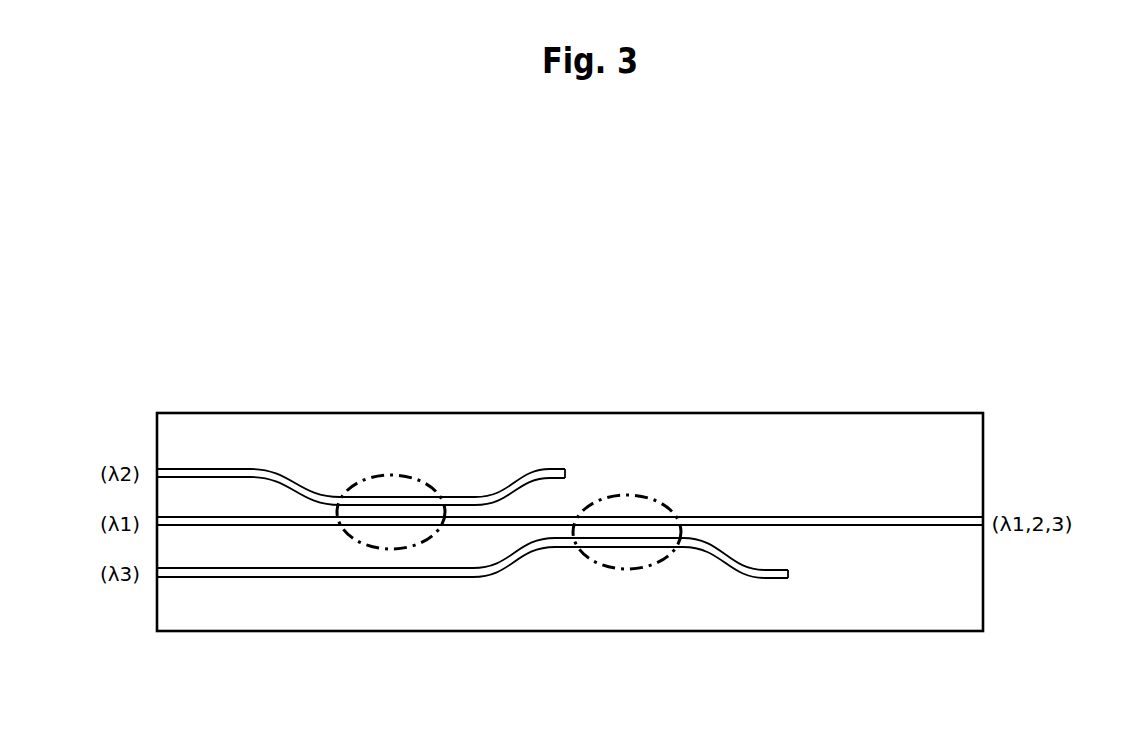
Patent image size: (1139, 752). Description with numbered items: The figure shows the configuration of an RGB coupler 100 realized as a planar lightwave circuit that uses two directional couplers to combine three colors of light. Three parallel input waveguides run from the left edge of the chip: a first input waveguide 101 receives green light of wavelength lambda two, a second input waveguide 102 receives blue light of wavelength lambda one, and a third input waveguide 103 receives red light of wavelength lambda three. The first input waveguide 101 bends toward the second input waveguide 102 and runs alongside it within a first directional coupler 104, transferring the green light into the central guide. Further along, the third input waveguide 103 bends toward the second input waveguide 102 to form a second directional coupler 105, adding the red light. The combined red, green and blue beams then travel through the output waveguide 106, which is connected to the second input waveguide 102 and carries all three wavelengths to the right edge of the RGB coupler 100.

The RGB coupler 100 is at (643, 404).
The first input waveguide 101 is at (213, 475).
The second input waveguide 102 is at (233, 525).
The third input waveguide 103 is at (230, 577).
The first directional coupler 104 is at (395, 475).
The second directional coupler 105 is at (624, 570).
The output waveguide 106 is at (890, 520).